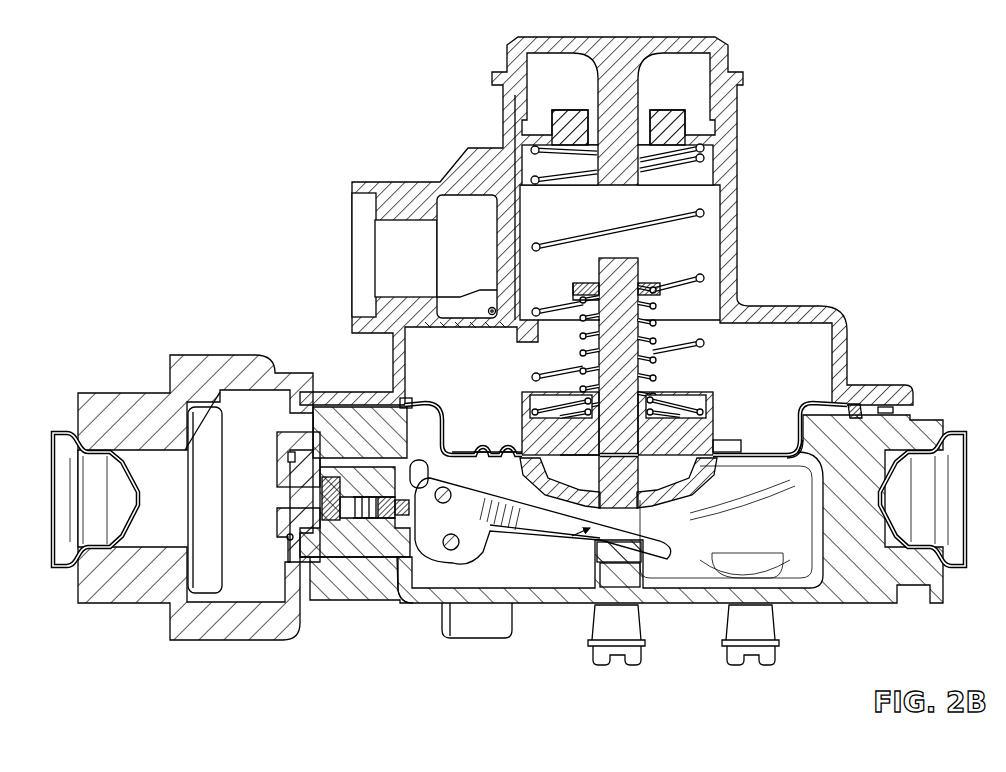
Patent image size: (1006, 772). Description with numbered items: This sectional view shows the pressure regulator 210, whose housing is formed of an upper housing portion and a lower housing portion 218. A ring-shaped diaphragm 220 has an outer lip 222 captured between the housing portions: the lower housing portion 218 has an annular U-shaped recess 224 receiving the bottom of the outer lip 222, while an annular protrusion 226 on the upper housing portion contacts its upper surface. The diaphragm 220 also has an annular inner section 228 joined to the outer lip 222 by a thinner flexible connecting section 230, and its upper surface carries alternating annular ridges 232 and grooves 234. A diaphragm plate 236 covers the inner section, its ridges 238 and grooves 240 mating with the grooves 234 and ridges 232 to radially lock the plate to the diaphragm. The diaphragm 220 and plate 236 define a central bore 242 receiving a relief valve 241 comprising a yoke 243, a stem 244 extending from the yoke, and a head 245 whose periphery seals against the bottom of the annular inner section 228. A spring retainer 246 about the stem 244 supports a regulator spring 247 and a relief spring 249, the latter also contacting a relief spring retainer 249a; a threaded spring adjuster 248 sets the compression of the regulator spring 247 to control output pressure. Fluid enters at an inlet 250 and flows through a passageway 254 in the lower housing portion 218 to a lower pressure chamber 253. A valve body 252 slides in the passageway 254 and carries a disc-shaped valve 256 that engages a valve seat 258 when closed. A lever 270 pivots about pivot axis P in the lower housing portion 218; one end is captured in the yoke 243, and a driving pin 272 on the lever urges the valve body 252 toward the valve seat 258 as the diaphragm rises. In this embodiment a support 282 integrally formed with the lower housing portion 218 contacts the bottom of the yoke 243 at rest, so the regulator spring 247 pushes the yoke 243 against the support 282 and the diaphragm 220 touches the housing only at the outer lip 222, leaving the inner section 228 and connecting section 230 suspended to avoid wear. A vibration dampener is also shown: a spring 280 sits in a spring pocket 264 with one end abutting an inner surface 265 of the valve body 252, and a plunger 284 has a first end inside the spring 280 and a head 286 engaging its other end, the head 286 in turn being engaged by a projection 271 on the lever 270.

The pressure regulator 210 is at (805, 72).
The lower housing portion 218 is at (783, 600).
The diaphragm 220 is at (418, 407).
The outer lip 222 is at (840, 430).
The annular U-shaped recess 224 is at (890, 410).
The annular protrusion 226 is at (857, 408).
The annular inner section 228 is at (787, 463).
The flexible connecting section 230 is at (425, 400).
The annular ridges 232 is at (737, 460).
The grooves 234 is at (737, 440).
The diaphragm plate 236 is at (455, 442).
The ridges 238 is at (508, 445).
The grooves 240 is at (487, 445).
The relief valve 241 is at (665, 425).
The central bore 242 is at (568, 515).
The yoke 243 is at (630, 552).
The stem 244 is at (633, 272).
The head 245 is at (678, 492).
The spring retainer 246 is at (648, 452).
The regulator spring 247 is at (580, 165).
The threaded spring adjuster 248 is at (530, 133).
The relief spring 249 is at (653, 337).
The relief spring retainer 249a is at (572, 287).
The inlet 250 is at (280, 500).
The valve body 252 is at (340, 530).
The lower pressure chamber 253 is at (702, 582).
The passageway 254 is at (317, 452).
The disc-shaped valve 256 is at (330, 540).
The valve seat 258 is at (317, 500).
The spring pocket 264 is at (386, 520).
The inner surface 265 is at (345, 470).
The lever 270 is at (580, 530).
The projection 271 is at (416, 468).
The driving pin 272 is at (466, 498).
The spring 280 is at (377, 520).
The support 282 is at (613, 568).
The plunger 284 is at (452, 550).
The head 286 is at (448, 503).
The pivot axis P is at (600, 540).